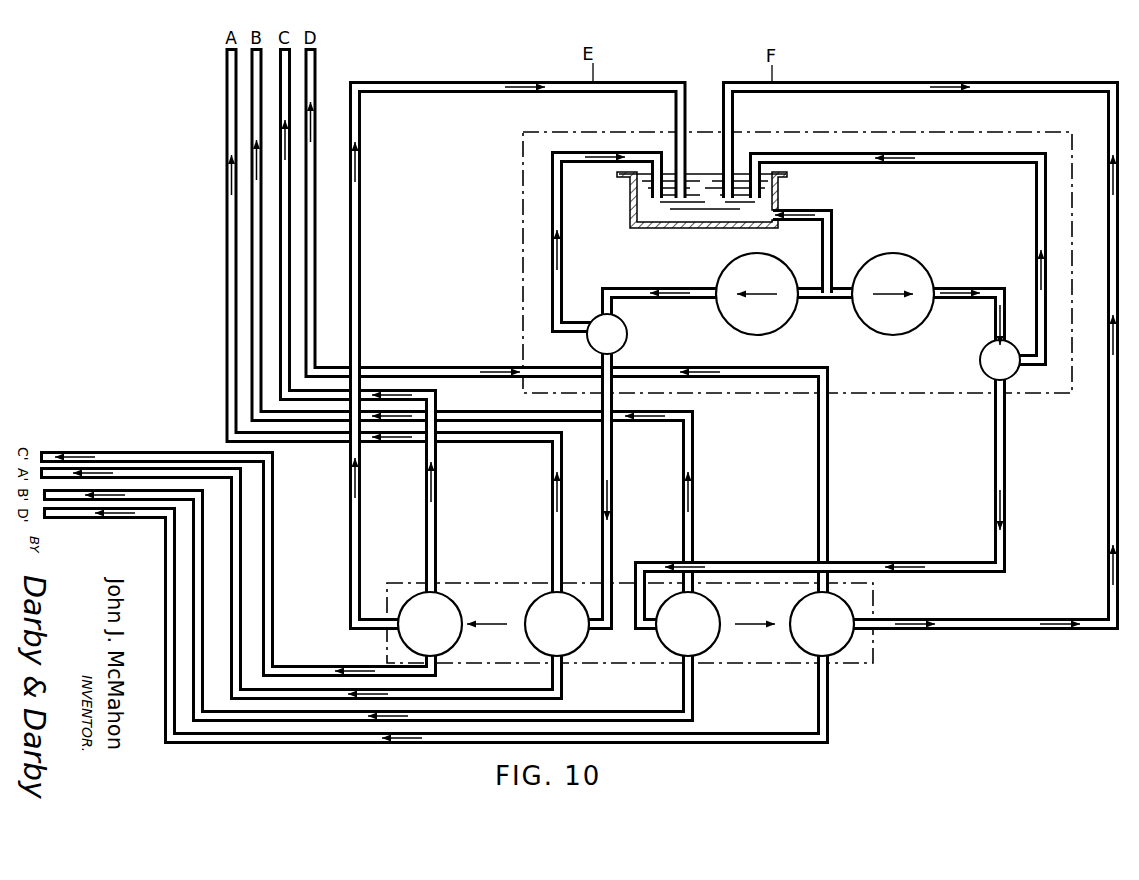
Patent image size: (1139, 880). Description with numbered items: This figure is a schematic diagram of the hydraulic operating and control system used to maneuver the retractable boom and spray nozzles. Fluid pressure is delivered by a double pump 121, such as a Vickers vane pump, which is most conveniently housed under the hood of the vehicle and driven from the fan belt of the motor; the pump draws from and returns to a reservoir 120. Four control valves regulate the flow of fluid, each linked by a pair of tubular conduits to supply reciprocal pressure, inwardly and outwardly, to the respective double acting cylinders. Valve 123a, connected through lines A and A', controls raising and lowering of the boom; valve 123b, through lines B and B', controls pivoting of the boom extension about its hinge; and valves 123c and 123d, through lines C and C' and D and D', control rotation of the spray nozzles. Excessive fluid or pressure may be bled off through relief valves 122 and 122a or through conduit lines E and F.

The reservoir tank 120 is at (778, 186).
The double pump 121 is at (860, 307).
The relief valve 122 is at (623, 338).
The relief valve 122a is at (981, 360).
The valve 123a is at (567, 603).
The valve 123b is at (698, 610).
The valve 123c is at (443, 602).
The valve 123d is at (832, 610).